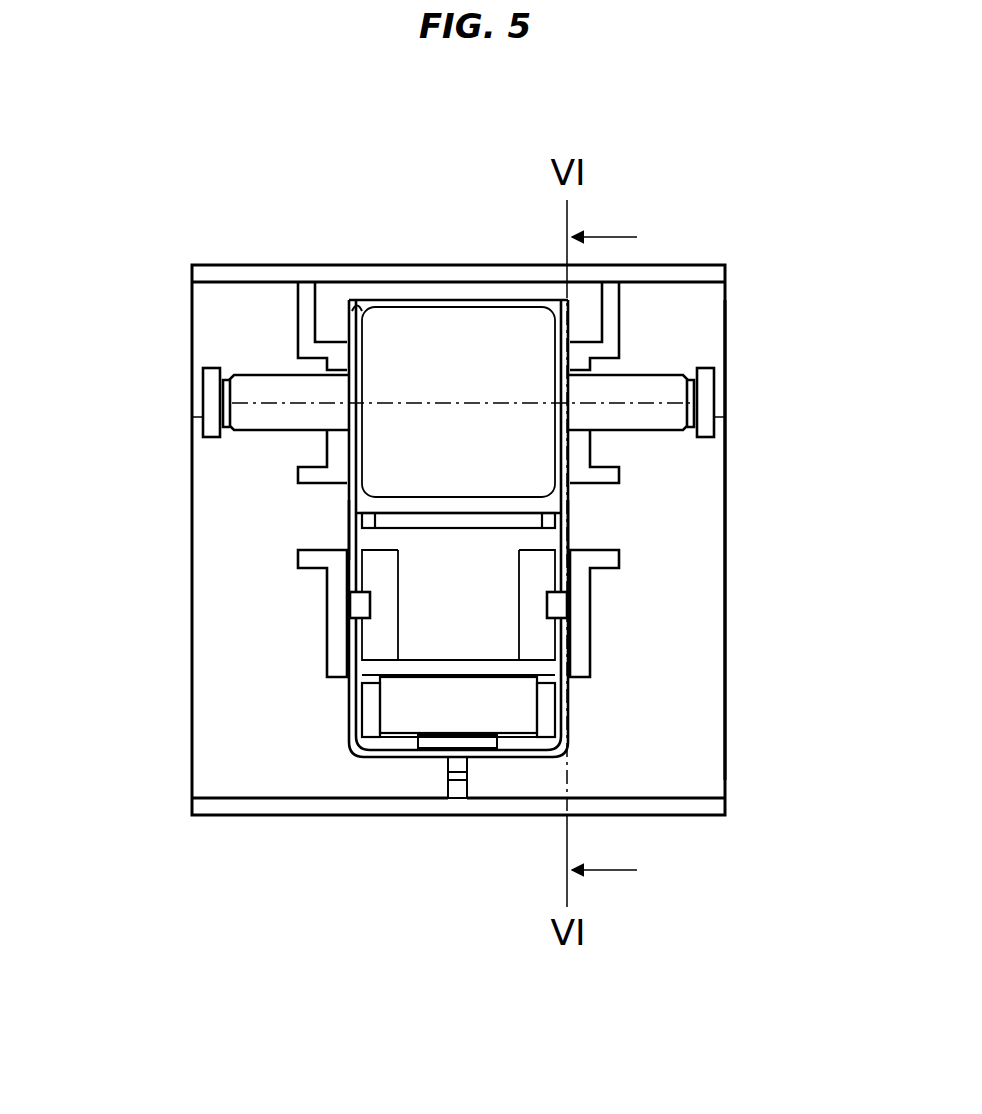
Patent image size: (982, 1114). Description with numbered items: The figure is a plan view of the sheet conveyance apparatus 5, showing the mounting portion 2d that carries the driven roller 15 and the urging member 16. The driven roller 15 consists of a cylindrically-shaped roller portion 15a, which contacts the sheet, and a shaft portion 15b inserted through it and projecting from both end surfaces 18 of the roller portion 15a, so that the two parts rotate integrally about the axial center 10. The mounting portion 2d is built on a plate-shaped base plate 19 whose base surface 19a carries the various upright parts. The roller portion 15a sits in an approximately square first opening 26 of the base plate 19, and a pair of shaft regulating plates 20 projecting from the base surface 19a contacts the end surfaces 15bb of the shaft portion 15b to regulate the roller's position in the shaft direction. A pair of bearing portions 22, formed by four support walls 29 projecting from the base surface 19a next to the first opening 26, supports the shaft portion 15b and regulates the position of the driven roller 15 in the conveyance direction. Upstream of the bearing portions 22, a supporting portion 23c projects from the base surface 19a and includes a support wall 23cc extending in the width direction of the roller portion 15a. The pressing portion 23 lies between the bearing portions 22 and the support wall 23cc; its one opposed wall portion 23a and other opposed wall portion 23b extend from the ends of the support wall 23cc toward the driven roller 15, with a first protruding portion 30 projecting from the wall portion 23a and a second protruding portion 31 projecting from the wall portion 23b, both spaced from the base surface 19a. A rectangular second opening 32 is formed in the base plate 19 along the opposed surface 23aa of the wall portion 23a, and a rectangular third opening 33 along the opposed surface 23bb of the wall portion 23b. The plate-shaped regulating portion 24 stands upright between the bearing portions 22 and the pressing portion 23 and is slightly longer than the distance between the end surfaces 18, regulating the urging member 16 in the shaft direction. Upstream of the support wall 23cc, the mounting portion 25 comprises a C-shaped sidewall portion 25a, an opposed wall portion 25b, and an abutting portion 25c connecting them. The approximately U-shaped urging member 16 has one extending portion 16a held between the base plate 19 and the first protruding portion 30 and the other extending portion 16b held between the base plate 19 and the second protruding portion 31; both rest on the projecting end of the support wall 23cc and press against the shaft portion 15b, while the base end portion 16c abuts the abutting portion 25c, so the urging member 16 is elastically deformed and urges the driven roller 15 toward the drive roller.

The sheet conveyance apparatus 5 is at (722, 171).
The mounting portion 2d is at (692, 622).
The axial center 10 is at (213, 293).
The driven roller 15 is at (391, 300).
The roller portion 15a is at (453, 307).
The shaft portion 15b is at (252, 373).
The end surfaces 15bb is at (222, 415).
The urging member 16 is at (366, 760).
The one extending portion 16a is at (349, 526).
The other extending portion 16b is at (569, 522).
The base end portion 16c is at (432, 755).
The end surfaces 18 is at (572, 335).
The base plate 19 is at (726, 685).
The base surface 19a is at (692, 770).
The shaft regulating plates 20 is at (203, 387).
The bearing portions 22 is at (283, 343).
The pressing portion 23 is at (316, 655).
The one opposed wall portion 23a is at (327, 586).
The opposed surface 23aa is at (360, 565).
The other opposed wall portion 23b is at (591, 585).
The opposed surface 23bb is at (560, 578).
The supporting portion 23c is at (452, 668).
The support wall 23cc is at (502, 668).
The regulating portion 24 is at (455, 522).
The mounting portion 25 is at (332, 743).
The sidewall portion 25a is at (370, 717).
The opposed wall portion 25b is at (542, 718).
The abutting portion 25c is at (545, 752).
The first opening 26 is at (356, 302).
The support walls 29 is at (313, 362).
The first protruding portion 30 is at (370, 607).
The second protruding portion 31 is at (547, 605).
The second opening 32 is at (393, 634).
The third opening 33 is at (522, 637).